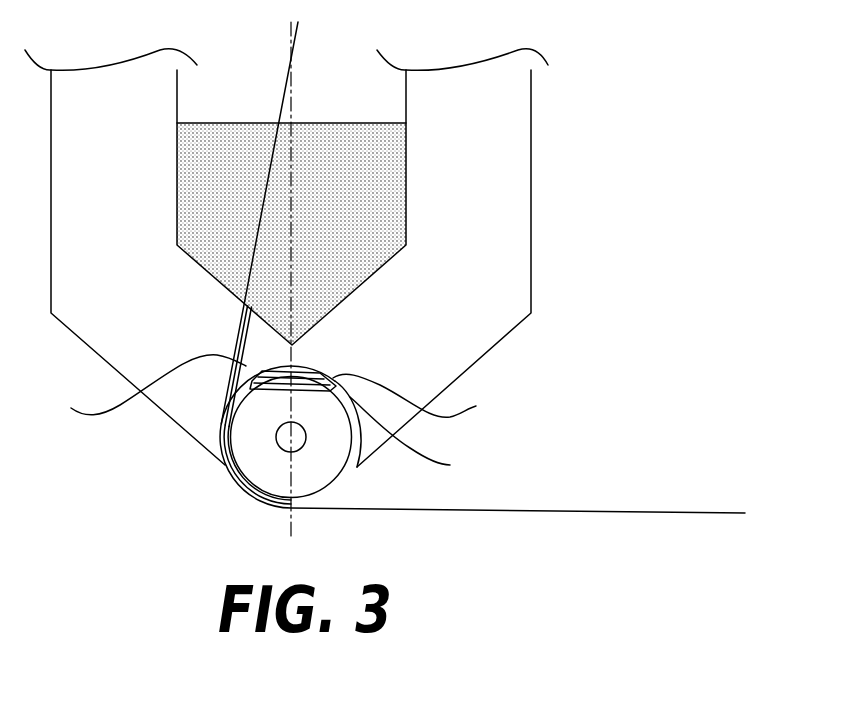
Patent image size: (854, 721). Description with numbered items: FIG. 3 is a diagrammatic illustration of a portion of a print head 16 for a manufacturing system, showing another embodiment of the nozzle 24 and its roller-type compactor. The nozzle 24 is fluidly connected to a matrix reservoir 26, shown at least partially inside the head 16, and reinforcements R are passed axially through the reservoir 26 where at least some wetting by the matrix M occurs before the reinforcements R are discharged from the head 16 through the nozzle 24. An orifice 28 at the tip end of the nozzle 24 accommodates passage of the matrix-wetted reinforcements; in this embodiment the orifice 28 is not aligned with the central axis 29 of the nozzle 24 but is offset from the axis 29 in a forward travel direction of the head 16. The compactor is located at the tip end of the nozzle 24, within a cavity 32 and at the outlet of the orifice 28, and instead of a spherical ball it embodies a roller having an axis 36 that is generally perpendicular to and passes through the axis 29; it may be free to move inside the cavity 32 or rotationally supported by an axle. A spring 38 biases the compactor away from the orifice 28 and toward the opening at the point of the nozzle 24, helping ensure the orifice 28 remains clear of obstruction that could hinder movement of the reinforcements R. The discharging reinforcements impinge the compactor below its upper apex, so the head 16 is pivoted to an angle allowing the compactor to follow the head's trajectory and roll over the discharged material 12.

The metal strip / ribbon 12 is at (588, 510).
The head 16 is at (613, 118).
The nozzle 24 is at (531, 88).
The matrix reservoir 26 is at (177, 105).
The orifice 28 is at (147, 386).
The central axis 29 is at (292, 522).
The cavity 32 is at (404, 427).
The axis 36 is at (278, 441).
The spring 38 is at (415, 395).
The reinforcements R is at (283, 97).
The matrix M is at (291, 220).